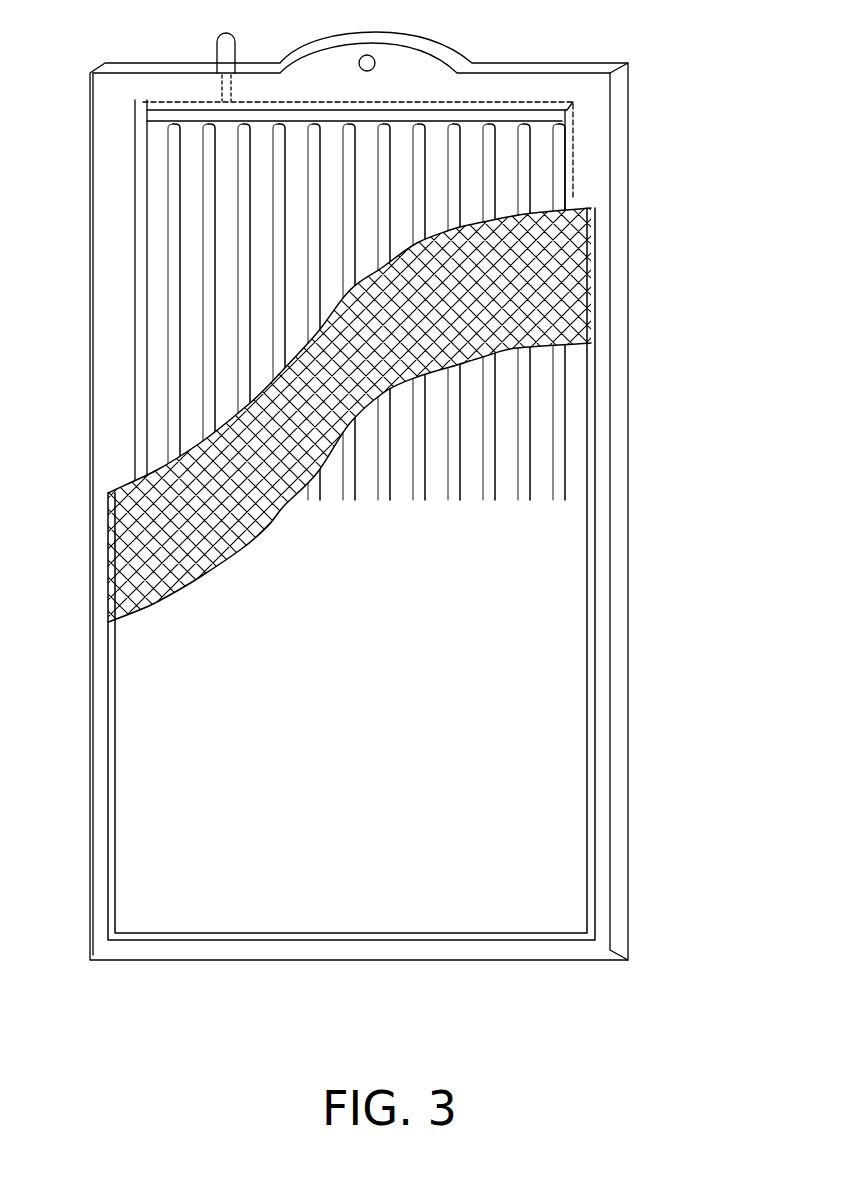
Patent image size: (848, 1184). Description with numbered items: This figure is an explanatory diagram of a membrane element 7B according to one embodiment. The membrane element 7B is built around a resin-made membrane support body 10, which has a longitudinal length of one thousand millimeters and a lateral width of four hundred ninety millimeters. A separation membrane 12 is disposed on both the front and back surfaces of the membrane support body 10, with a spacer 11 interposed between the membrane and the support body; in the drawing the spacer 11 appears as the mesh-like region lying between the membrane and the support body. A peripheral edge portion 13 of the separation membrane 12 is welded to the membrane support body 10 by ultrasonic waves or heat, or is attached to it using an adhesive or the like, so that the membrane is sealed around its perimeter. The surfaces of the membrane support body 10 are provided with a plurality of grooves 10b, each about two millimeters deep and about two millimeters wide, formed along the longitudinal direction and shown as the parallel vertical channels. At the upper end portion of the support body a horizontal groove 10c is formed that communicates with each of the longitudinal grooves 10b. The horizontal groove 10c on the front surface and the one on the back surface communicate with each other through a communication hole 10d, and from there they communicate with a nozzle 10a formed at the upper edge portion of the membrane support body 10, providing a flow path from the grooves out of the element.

The membrane element 7B is at (668, 502).
The membrane support body 10 is at (600, 188).
The nozzle 10a is at (233, 50).
The grooves 10b is at (170, 155).
The horizontal groove 10c is at (140, 118).
The communication hole 10d is at (215, 84).
The spacer 11 is at (593, 312).
The separation membrane 12 is at (573, 435).
The peripheral edge portion 13 is at (590, 667).